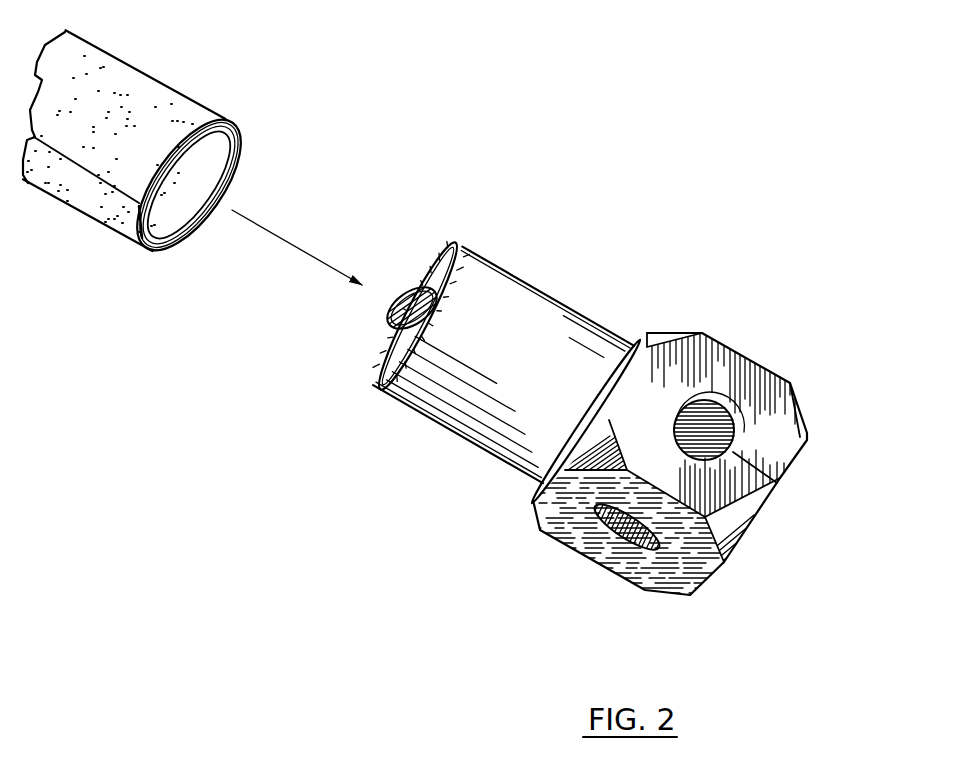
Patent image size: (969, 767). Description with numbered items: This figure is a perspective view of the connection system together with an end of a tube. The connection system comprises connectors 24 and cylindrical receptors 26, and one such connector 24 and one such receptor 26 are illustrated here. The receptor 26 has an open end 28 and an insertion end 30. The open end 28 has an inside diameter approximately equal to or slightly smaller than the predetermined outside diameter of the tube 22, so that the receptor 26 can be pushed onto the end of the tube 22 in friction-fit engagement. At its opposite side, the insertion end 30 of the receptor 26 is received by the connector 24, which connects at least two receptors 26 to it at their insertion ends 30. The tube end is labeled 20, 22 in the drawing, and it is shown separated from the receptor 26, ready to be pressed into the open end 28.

The hose 20 is at (174, 139).
The tube 22 is at (118, 85).
The connector 24 is at (755, 345).
The cylindrical receptor 26 is at (521, 289).
The open end 28 is at (376, 368).
The insertion end 30 is at (630, 343).